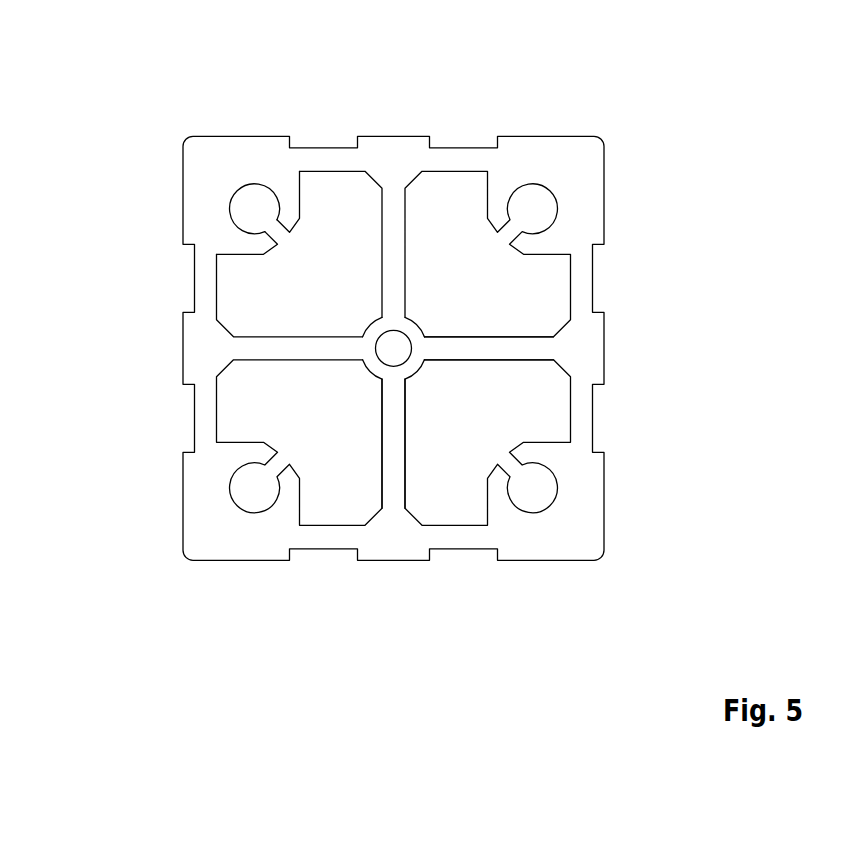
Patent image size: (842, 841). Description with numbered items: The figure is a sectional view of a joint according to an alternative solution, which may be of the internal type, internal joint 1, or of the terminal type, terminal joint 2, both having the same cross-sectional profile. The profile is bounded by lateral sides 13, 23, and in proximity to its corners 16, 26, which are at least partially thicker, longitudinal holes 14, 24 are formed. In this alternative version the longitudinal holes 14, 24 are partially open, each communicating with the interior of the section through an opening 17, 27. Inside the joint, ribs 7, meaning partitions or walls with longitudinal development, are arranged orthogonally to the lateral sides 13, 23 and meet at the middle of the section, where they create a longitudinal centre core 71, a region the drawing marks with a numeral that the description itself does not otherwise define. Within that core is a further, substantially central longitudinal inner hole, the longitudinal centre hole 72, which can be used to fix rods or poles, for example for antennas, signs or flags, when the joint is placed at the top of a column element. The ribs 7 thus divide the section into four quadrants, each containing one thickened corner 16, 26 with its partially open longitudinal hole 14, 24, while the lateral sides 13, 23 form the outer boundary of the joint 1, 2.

The internal joint 1 is at (408, 354).
The terminal joint 2 is at (687, 118).
The lateral side 13 is at (322, 406).
The lateral side 23 is at (205, 413).
The longitudinal hole 14 is at (291, 133).
The longitudinal hole 24 is at (271, 209).
The corner 16 is at (372, 145).
The corner 26 is at (317, 210).
The opening 17 is at (181, 277).
The opening 27 is at (306, 247).
The rib 7 is at (497, 347).
The hub 71 is at (412, 368).
The longitudinal centre hole 72 is at (405, 347).